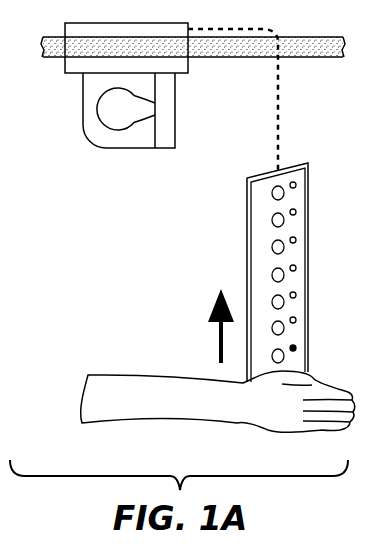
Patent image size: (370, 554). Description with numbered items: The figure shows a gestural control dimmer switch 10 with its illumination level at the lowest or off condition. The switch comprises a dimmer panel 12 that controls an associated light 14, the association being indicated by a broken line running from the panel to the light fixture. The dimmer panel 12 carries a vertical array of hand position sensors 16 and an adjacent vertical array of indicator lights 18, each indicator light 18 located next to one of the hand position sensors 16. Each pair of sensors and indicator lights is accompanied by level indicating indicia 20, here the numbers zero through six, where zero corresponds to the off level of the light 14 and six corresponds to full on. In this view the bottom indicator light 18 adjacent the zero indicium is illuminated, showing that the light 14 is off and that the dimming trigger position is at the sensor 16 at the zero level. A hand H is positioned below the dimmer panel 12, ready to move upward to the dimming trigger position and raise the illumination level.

The gestural control dimmer switch 10 is at (99, 277).
The dimmer panel 12 is at (310, 172).
The light 14 is at (107, 158).
The hand position sensors 16 is at (285, 329).
The indicator lights 18 is at (296, 239).
The level indicating indicia 20 is at (253, 282).
The hand H is at (177, 418).